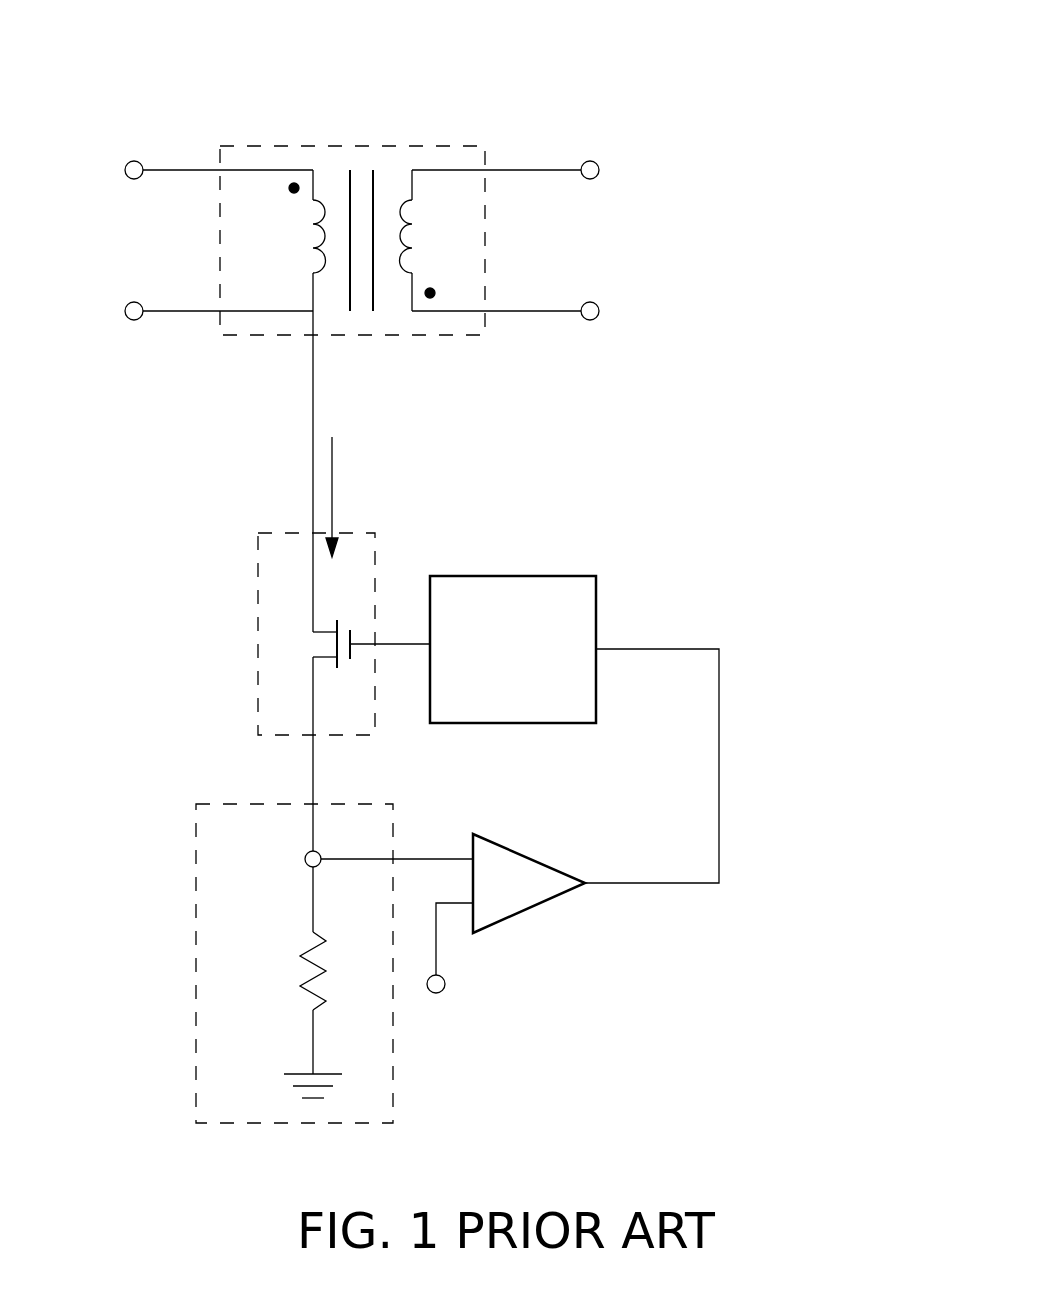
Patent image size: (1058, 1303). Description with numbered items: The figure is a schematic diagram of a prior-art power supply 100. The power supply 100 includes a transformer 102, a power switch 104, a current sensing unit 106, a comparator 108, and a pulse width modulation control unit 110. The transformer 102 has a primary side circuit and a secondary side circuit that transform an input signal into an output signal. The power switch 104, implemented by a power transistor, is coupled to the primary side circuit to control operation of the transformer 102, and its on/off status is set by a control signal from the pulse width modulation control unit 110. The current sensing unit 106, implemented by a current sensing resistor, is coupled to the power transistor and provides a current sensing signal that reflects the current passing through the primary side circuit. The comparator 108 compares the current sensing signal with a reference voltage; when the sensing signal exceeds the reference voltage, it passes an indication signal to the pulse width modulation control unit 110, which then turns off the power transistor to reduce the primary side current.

The power supply 100 is at (753, 97).
The transformer 102 is at (440, 146).
The power switch 104 is at (258, 573).
The current sensing unit 106 is at (196, 900).
The comparator 108 is at (523, 853).
The pulse width modulation control unit 110 is at (540, 576).